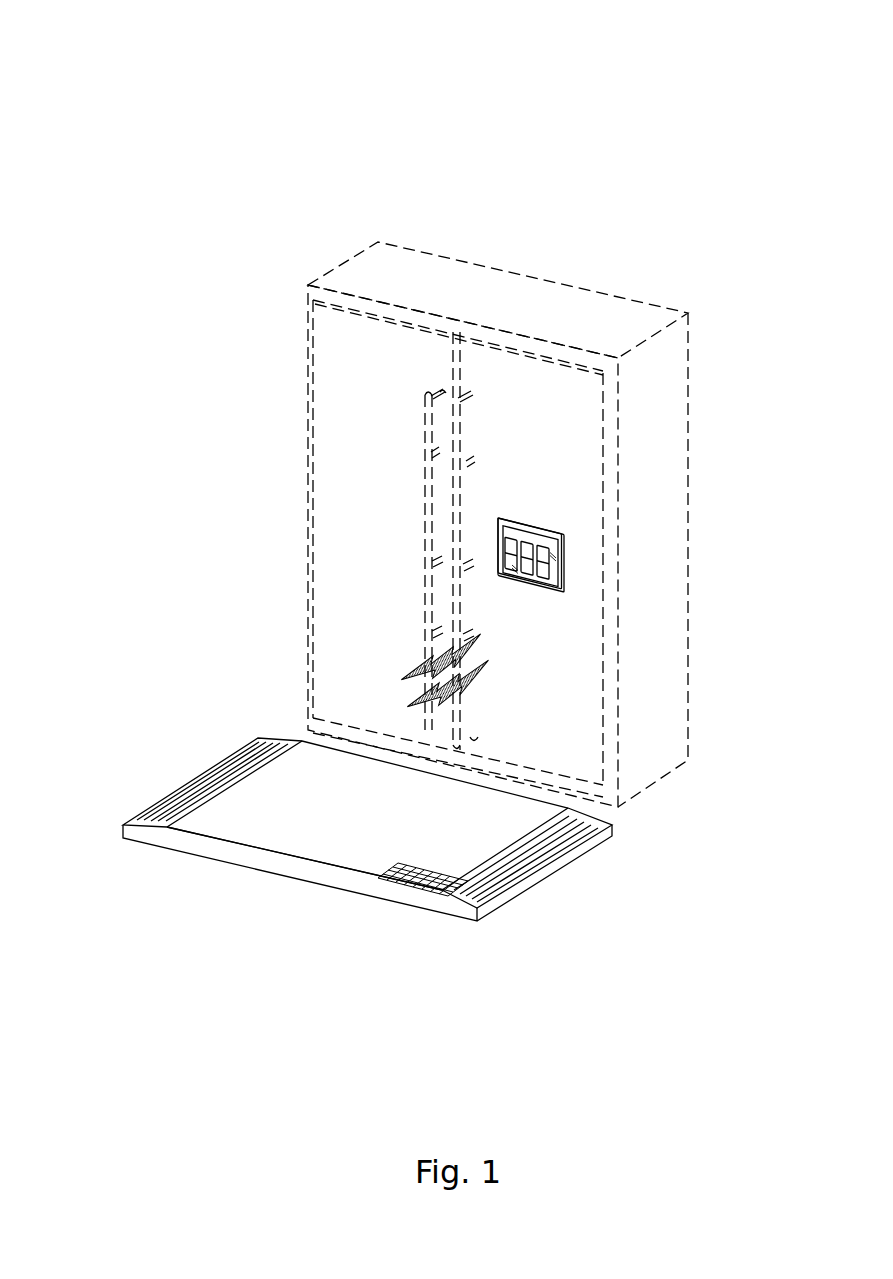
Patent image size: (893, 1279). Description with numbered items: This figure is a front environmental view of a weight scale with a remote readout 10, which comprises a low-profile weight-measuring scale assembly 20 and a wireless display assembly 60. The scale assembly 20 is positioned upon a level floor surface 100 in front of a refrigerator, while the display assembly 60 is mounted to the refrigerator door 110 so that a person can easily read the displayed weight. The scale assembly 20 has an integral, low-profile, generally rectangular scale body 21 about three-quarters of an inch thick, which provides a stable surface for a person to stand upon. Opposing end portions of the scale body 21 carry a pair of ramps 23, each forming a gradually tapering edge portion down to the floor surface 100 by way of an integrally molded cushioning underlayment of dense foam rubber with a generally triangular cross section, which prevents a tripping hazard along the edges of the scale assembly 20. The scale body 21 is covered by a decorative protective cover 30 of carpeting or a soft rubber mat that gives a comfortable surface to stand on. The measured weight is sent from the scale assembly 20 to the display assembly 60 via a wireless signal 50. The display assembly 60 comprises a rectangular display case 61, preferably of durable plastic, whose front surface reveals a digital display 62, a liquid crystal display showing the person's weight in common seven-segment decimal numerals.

The weight scale with a remote readout 10 is at (112, 97).
The scale assembly 20 is at (353, 805).
The scale body 21 is at (278, 863).
The ramp 23 is at (132, 817).
The cover 30 is at (424, 859).
The wireless signal 50 is at (414, 695).
The display assembly 60 is at (578, 463).
The display case 61 is at (537, 530).
The digital display 62 is at (552, 547).
The floor surface 100 is at (419, 612).
The refrigerator door 110 is at (593, 680).